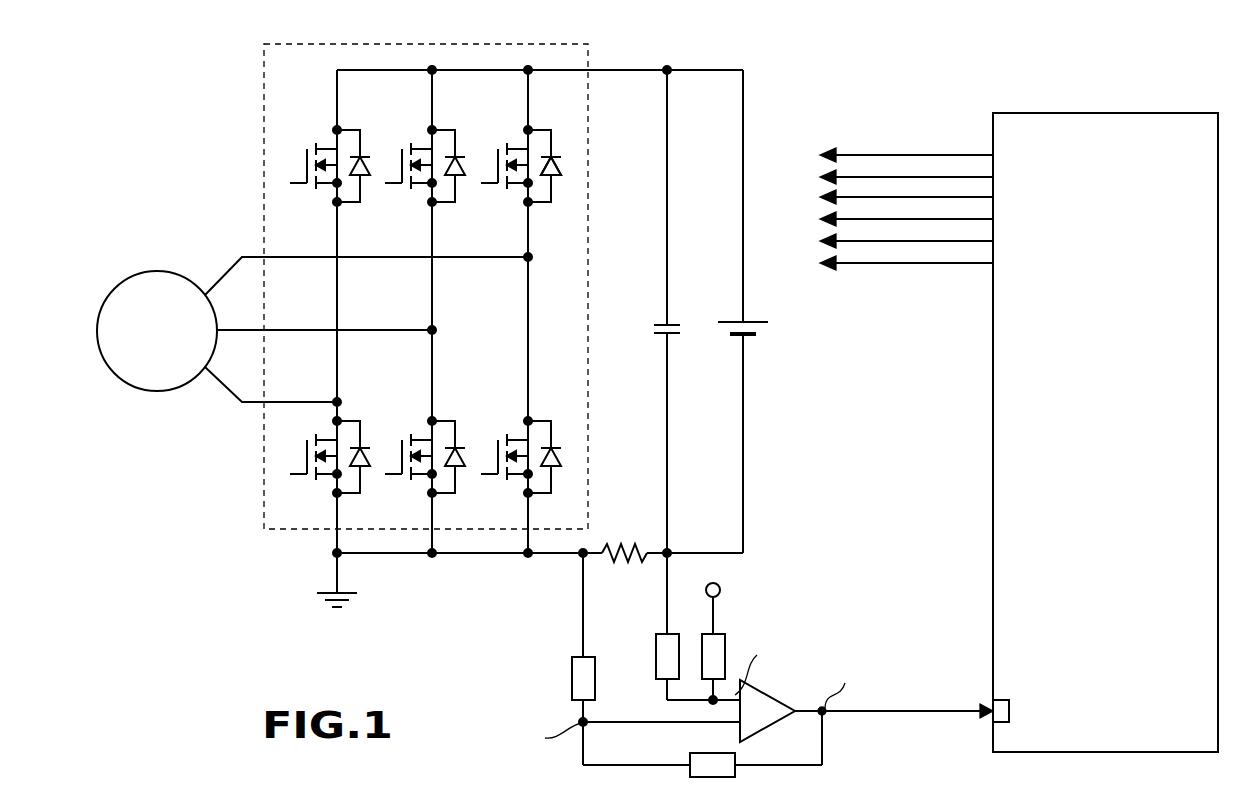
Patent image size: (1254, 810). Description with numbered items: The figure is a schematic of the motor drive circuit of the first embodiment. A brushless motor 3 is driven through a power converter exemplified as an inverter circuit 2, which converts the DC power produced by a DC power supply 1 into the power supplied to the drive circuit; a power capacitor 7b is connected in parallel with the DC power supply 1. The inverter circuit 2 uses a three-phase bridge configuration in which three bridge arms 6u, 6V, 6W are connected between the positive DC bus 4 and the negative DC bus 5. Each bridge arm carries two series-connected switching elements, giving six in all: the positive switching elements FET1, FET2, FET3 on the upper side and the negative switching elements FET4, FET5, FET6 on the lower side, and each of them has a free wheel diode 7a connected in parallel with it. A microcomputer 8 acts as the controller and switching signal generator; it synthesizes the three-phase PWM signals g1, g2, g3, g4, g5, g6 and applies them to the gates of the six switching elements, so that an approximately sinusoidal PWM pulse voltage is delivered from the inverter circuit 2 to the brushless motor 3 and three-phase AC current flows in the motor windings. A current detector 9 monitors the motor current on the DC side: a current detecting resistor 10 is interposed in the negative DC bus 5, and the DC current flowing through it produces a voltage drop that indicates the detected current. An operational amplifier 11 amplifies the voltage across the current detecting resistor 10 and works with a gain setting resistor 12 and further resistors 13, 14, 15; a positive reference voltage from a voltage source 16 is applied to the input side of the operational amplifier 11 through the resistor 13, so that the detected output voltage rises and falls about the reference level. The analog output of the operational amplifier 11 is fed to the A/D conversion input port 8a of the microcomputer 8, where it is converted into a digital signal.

The DC power supply 1 is at (752, 315).
The inverter circuit 2 is at (473, 300).
The brushless motor 3 is at (157, 270).
The DC bus 4 is at (703, 68).
The DC bus 5 is at (712, 550).
The bridge arm 6W is at (338, 232).
The bridge arm 6V is at (433, 232).
The bridge arm 6u is at (527, 302).
The free wheel diode 7a is at (556, 182).
The power capacitor 7b is at (672, 322).
The microcomputer 8 is at (992, 365).
The A/D conversion input port 8a is at (992, 690).
The current detector 9 is at (665, 665).
The current detecting resistor 10 is at (622, 540).
The operational amplifier 11 is at (773, 692).
The resistor 12 is at (697, 753).
The resistor 13 is at (727, 647).
The resistor 14 is at (571, 680).
The resistor 15 is at (655, 646).
The voltage source 16 is at (722, 588).
The PWM signal g1 is at (862, 154).
The PWM signal g2 is at (896, 176).
The PWM signal g3 is at (933, 196).
The PWM signal g4 is at (858, 220).
The PWM signal g5 is at (905, 242).
The PWM signal g6 is at (950, 264).
The switching element FET1 is at (517, 132).
The switching element FET2 is at (422, 132).
The switching element FET3 is at (327, 132).
The switching element FET4 is at (517, 482).
The switching element FET5 is at (422, 482).
The switching element FET6 is at (327, 482).